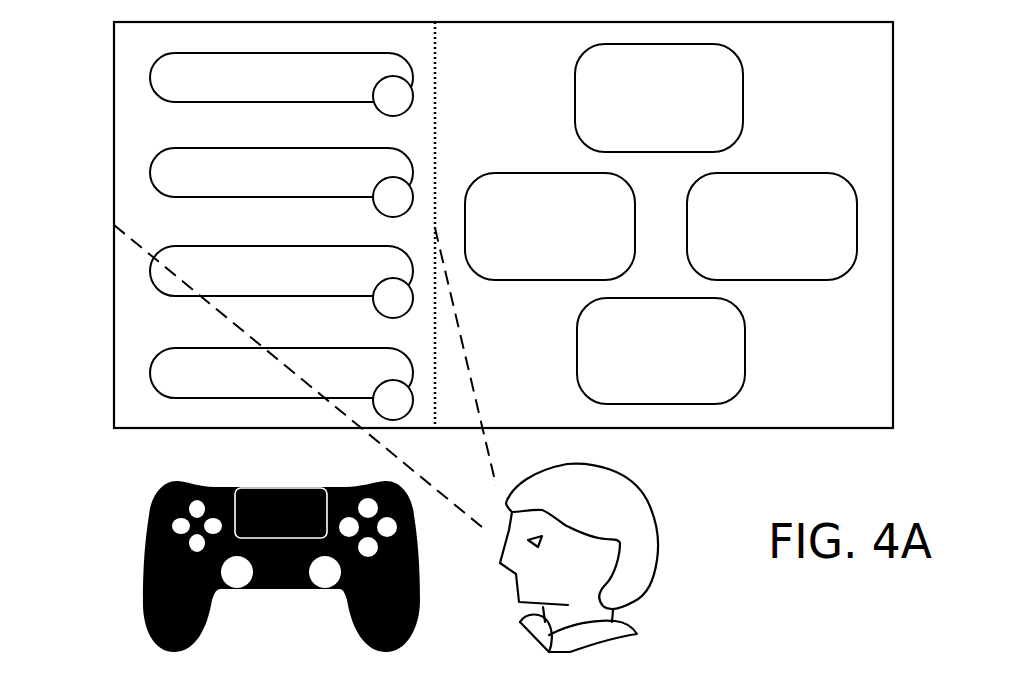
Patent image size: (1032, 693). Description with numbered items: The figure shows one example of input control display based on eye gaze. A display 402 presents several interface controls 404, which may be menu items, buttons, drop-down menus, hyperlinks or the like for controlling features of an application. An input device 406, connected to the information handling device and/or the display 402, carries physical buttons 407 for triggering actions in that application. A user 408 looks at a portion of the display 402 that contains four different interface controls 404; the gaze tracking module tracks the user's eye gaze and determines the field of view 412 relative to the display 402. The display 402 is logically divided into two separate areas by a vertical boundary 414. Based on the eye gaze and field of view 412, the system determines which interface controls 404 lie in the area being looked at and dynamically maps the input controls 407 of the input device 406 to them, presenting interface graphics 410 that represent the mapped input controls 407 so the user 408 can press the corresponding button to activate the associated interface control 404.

The display 402 is at (114, 153).
The interface controls 404 is at (149, 72).
The input device 406 is at (150, 546).
The physical buttons 407 is at (410, 540).
The user 408 is at (630, 483).
The interface graphics 410 is at (393, 112).
The field of view 412 is at (368, 440).
The vertical boundary 414 is at (435, 57).